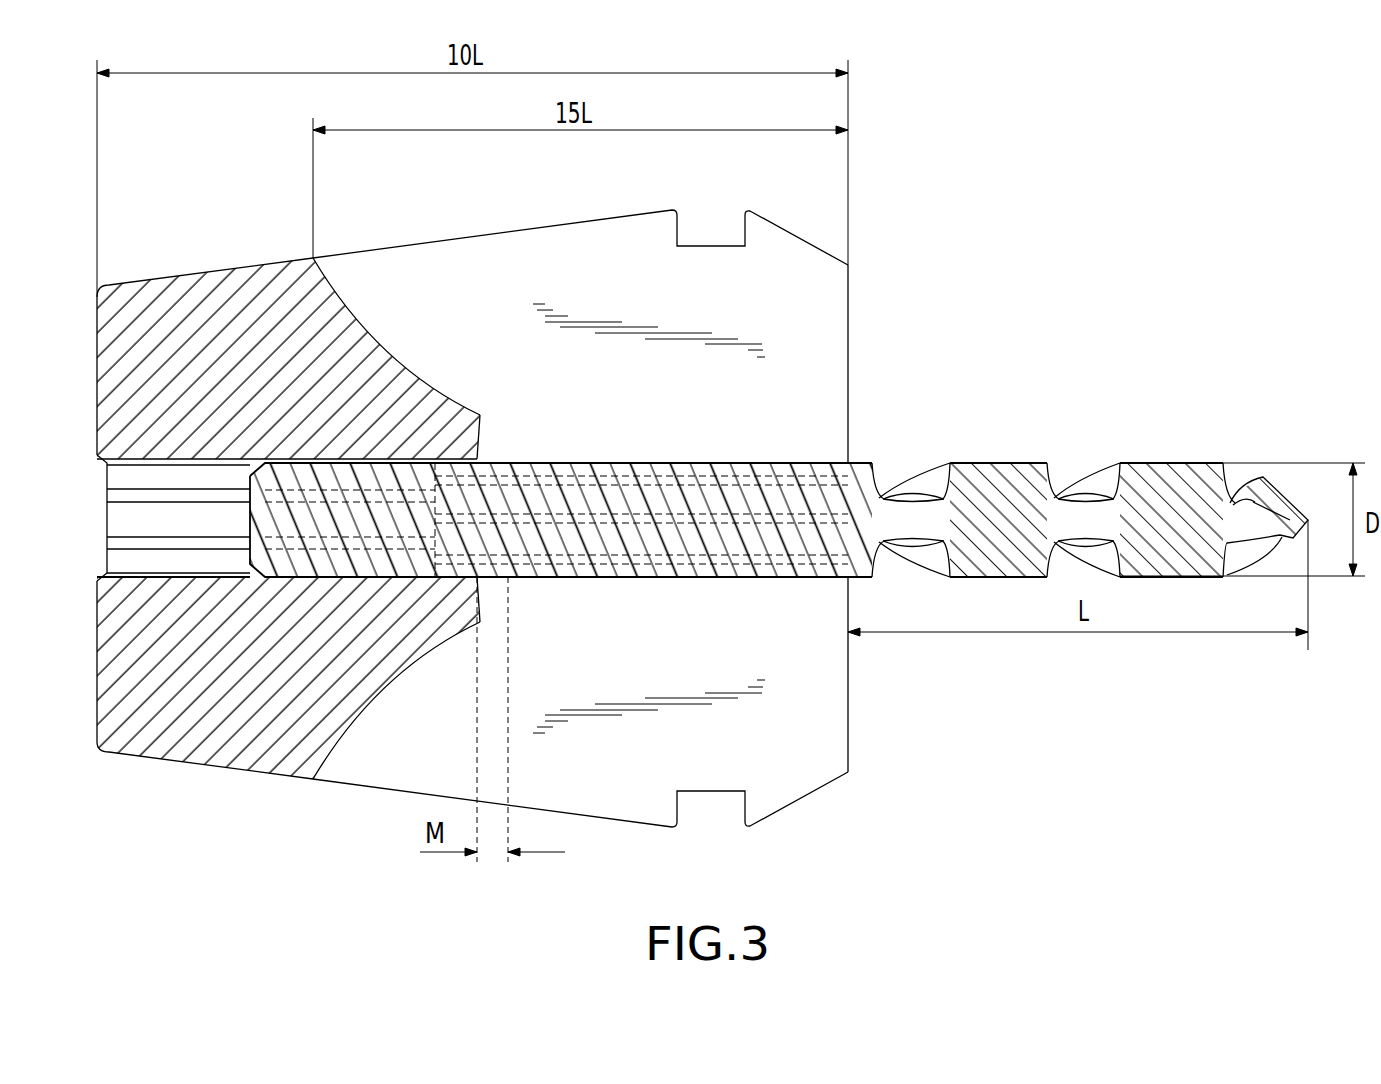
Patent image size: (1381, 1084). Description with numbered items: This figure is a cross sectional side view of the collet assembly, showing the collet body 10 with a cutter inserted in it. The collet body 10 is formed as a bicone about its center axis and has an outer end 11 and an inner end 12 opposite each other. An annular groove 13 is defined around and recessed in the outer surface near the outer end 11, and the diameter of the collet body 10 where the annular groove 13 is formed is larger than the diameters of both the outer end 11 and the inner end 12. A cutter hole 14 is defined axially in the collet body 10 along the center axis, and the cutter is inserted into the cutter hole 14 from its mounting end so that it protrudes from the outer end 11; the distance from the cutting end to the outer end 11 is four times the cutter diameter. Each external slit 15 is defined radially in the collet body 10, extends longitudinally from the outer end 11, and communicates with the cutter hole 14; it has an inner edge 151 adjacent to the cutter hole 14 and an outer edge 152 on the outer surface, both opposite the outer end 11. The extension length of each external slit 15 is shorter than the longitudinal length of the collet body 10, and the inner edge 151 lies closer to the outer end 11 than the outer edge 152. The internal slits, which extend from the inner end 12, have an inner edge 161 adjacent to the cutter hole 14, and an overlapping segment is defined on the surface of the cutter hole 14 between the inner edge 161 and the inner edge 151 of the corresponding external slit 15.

The collet body 10 is at (218, 245).
The outer end 11 is at (848, 290).
The inner end 12 is at (97, 330).
The annular groove 13 is at (710, 243).
The cutter hole 14 is at (128, 519).
The external slit 15 is at (553, 267).
The inner edge 151 is at (477, 461).
The outer edge 152 is at (313, 259).
The inner edge 161 is at (515, 597).